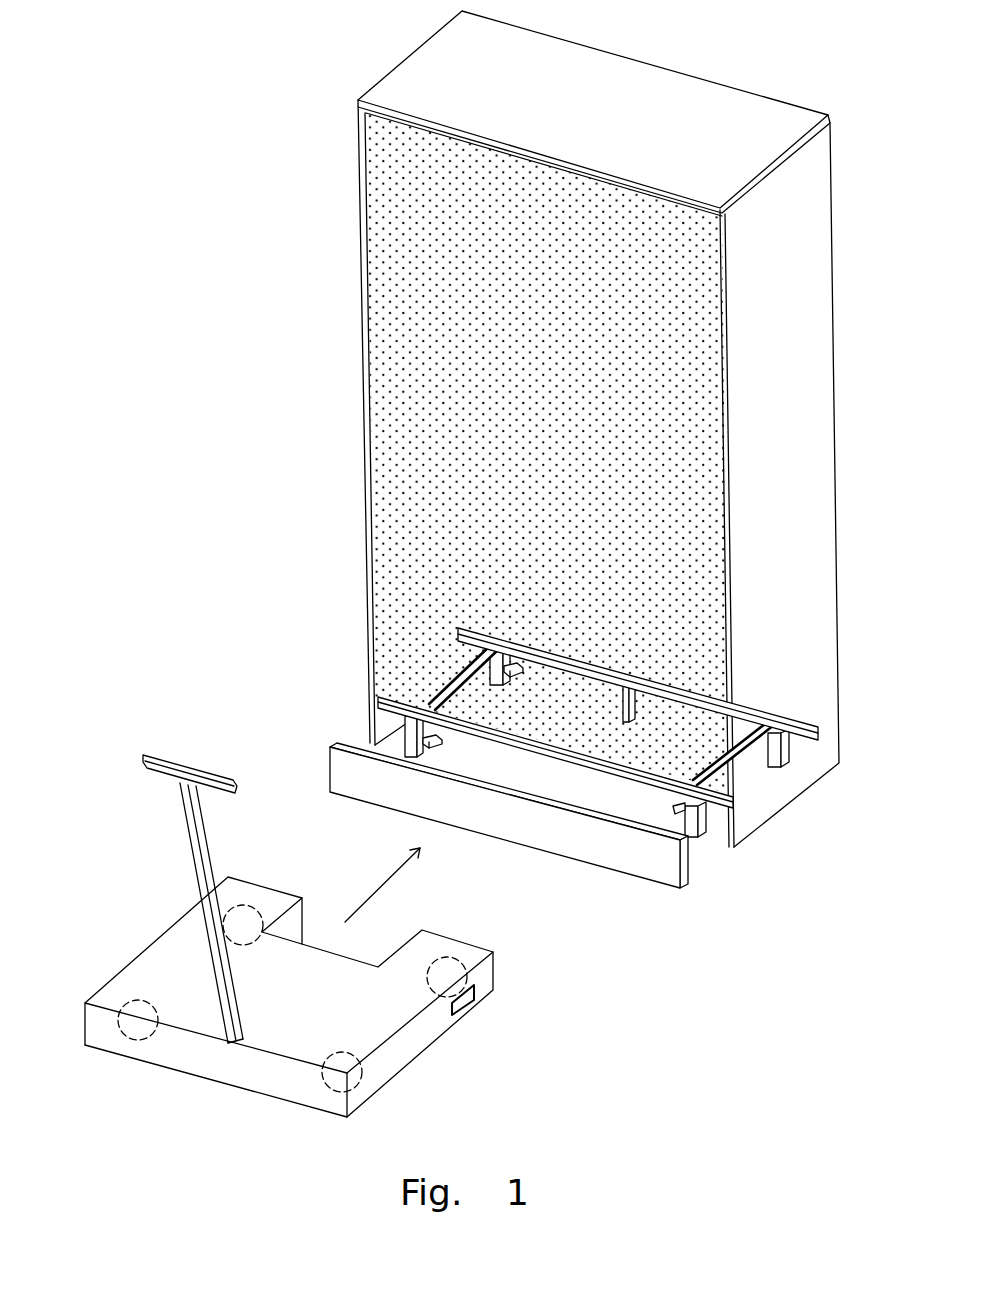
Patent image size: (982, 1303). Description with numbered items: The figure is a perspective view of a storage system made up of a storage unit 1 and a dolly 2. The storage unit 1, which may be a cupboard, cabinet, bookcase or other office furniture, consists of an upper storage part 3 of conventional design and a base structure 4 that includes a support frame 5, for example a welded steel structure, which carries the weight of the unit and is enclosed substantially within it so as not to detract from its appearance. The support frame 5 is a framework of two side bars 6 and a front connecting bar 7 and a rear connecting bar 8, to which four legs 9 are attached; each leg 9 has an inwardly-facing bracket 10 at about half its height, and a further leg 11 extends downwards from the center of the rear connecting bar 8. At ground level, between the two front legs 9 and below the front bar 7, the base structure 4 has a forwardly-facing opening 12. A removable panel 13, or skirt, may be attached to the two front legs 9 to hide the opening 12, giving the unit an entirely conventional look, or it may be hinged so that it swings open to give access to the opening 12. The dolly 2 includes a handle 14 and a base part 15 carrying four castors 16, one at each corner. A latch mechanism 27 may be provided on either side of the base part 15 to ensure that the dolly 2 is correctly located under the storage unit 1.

The storage unit 1 is at (539, 429).
The dolly 2 is at (304, 921).
The upper storage part 3 is at (357, 470).
The base structure 4 is at (370, 707).
The support frame 5 is at (697, 688).
The side bars 6 is at (571, 731).
The front connecting bar 7 is at (600, 773).
The rear connecting bar 8 is at (747, 700).
The legs 9 is at (783, 747).
The inwardly-facing bracket 10 is at (523, 672).
The further leg 11 is at (622, 710).
The forwardly-facing opening 12 is at (494, 815).
The removable panel 13 is at (468, 768).
The handle 14 is at (210, 850).
The base part 15 is at (152, 938).
The castors 16 is at (260, 907).
The latch mechanism 27 is at (487, 1007).